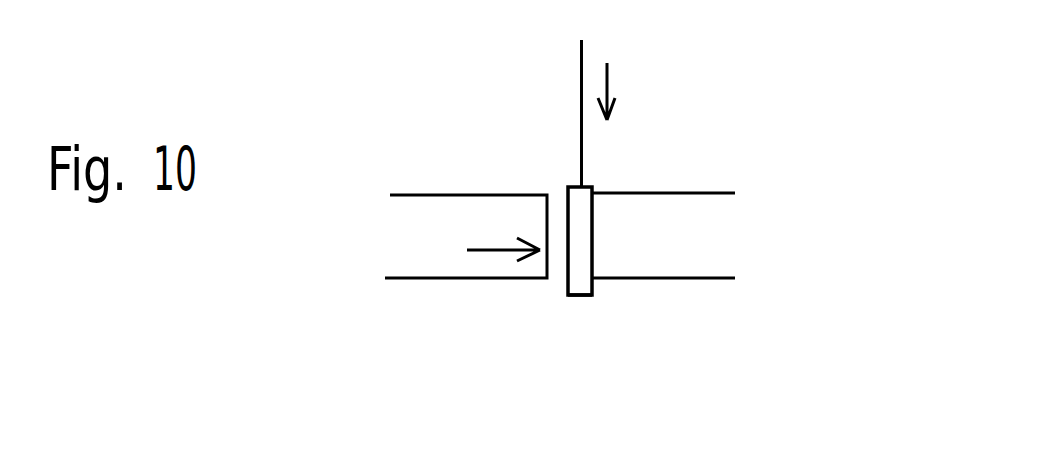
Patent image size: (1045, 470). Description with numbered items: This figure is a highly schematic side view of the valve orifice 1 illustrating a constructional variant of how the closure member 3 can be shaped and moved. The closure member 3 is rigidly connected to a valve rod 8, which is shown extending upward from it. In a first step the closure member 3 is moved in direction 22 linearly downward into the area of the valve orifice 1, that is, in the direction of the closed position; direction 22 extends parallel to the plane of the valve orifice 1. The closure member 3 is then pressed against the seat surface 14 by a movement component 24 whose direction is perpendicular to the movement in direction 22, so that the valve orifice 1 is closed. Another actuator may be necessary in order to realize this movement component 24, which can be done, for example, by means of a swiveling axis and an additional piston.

The valve orifice 1 is at (592, 228).
The closure member 3 is at (582, 280).
The valve rod 8 is at (581, 130).
The seat surface 14 is at (592, 247).
The direction 22 is at (607, 82).
The movement component 24 is at (505, 250).